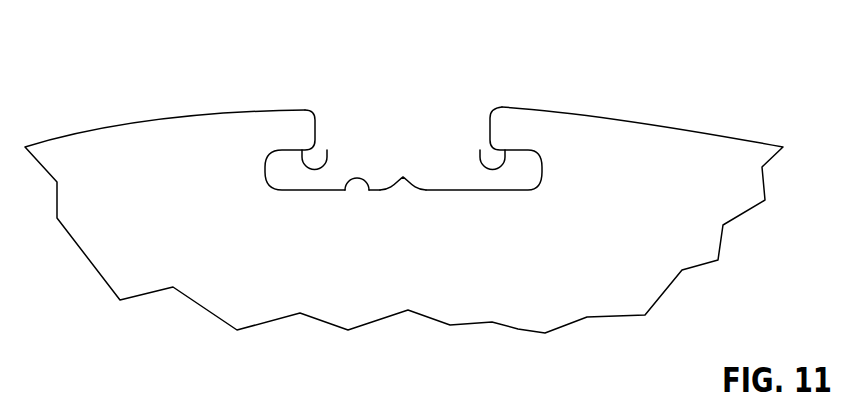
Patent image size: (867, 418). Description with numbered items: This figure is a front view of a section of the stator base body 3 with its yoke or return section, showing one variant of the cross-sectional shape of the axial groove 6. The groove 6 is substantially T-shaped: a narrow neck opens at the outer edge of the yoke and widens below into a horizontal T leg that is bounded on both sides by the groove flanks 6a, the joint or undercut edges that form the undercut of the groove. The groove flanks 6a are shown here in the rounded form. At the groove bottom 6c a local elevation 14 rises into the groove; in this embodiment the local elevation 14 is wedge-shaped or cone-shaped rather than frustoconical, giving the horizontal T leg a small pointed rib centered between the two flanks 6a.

The stator base body 3 is at (672, 147).
The axial groove 6 is at (423, 135).
The groove flanks 6a is at (327, 150).
The groove bottom 6c is at (363, 181).
The local elevation 14 is at (403, 177).